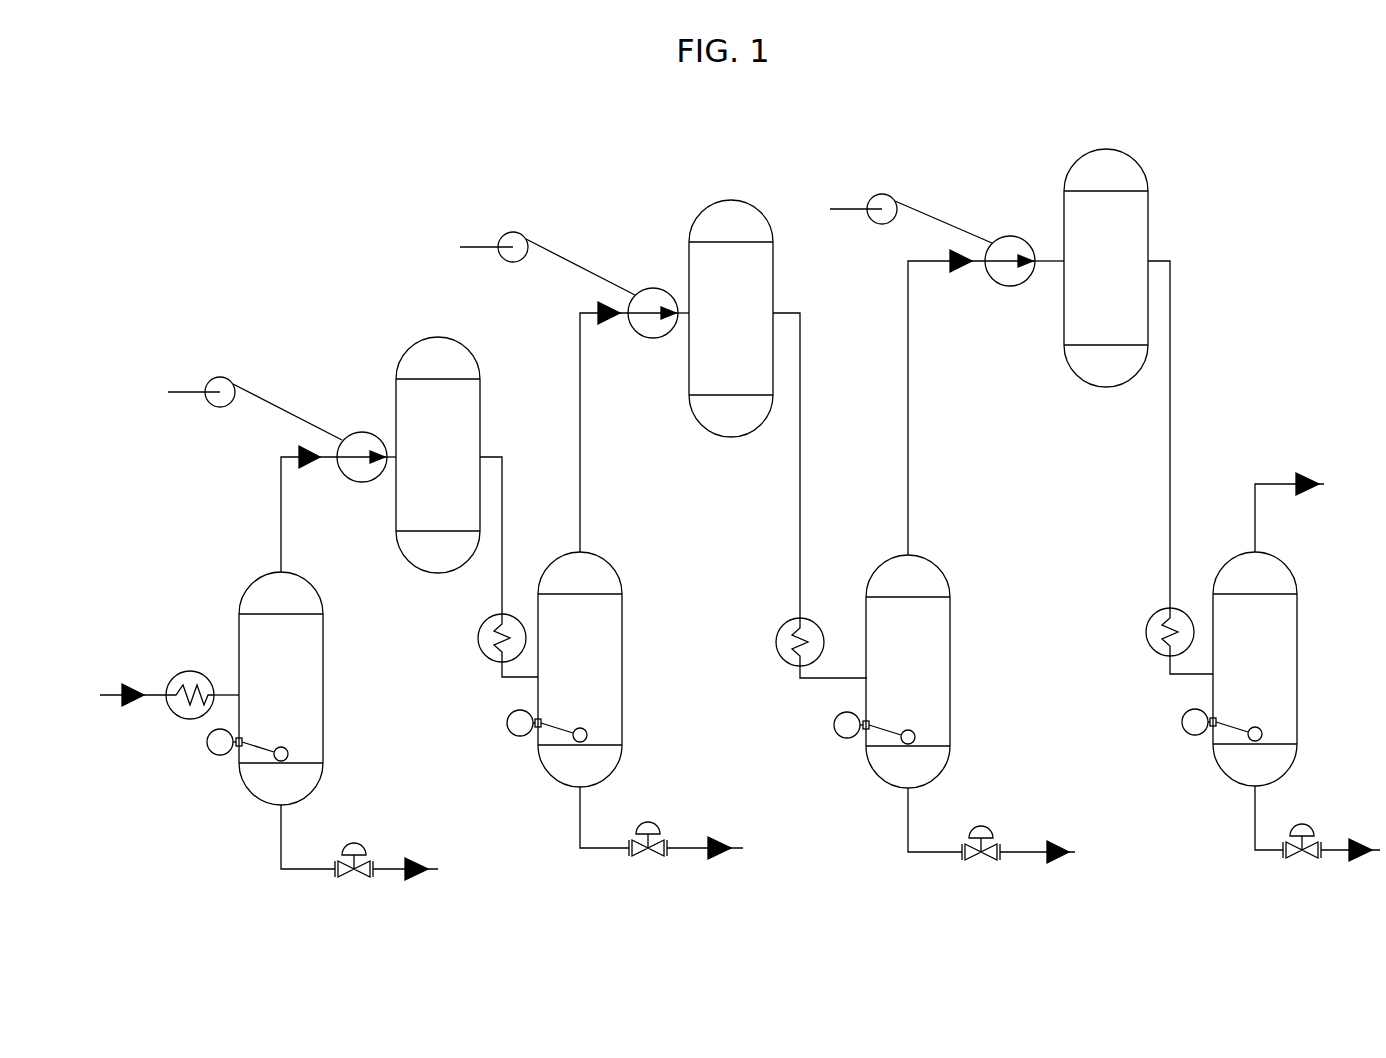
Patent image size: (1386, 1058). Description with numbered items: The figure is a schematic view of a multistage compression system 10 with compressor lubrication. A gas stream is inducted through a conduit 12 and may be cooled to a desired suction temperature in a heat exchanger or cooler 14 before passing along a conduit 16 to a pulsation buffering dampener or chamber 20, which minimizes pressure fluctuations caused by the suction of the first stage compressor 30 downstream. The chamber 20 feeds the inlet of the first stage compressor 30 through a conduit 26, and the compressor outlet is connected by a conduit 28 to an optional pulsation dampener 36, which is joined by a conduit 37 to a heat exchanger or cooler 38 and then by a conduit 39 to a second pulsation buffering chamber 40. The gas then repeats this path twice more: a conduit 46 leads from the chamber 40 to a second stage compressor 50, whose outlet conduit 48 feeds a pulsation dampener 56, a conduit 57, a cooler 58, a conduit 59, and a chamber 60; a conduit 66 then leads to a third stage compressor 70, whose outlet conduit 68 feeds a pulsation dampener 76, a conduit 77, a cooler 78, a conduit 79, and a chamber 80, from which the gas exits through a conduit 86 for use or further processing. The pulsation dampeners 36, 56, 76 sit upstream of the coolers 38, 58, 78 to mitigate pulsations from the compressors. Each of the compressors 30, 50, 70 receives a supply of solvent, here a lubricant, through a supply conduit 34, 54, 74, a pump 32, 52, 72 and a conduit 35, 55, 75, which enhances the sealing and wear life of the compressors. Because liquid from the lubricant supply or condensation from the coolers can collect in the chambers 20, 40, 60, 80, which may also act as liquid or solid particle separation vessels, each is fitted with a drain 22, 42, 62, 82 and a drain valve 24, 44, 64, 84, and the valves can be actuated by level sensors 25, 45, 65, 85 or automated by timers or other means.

The multistage compression system 10 is at (358, 134).
The conduit 12 is at (118, 688).
The heat exchanger or cooler 14 is at (188, 719).
The conduit 16 is at (228, 692).
The pulsation buffering dampener or chamber 20 is at (268, 692).
The drain 22 is at (281, 832).
The drain valve 24 is at (354, 847).
The level sensor 25 is at (208, 752).
The conduit 26 is at (278, 483).
The conduit 28 is at (393, 455).
The first stage compressor 30 is at (344, 420).
The pump 32 is at (220, 377).
The supply conduit 34 is at (188, 390).
The conduit 35 is at (237, 380).
The pulsation dampener 36 is at (425, 454).
The conduit 37 is at (503, 516).
The heat exchanger or cooler 38 is at (478, 642).
The conduit 39 is at (520, 678).
The pulsation buffering dampener or chamber 40 is at (567, 676).
The drain 42 is at (579, 825).
The drain valve 44 is at (648, 827).
The level sensor 45 is at (522, 737).
The conduit 46 is at (578, 335).
The conduit 48 is at (686, 310).
The second stage compressor 50 is at (636, 275).
The pump 52 is at (512, 232).
The supply conduit 54 is at (480, 247).
The conduit 55 is at (528, 237).
The pulsation dampener 56 is at (718, 324).
The conduit 57 is at (799, 583).
The heat exchanger or cooler 58 is at (777, 647).
The conduit 59 is at (833, 680).
The pulsation buffering dampener or chamber 60 is at (895, 676).
The drain 62 is at (907, 830).
The drain valve 64 is at (984, 831).
The level sensor 65 is at (833, 729).
The conduit 66 is at (906, 340).
The conduit 68 is at (1057, 260).
The third stage compressor 70 is at (993, 223).
The pump 72 is at (880, 194).
The supply conduit 74 is at (850, 209).
The conduit 75 is at (897, 198).
The pulsation dampener 76 is at (1093, 273).
The conduit 77 is at (1169, 550).
The heat exchanger or cooler 78 is at (1145, 634).
The conduit 79 is at (1185, 676).
The pulsation buffering dampener or chamber 80 is at (1242, 668).
The drain 82 is at (1254, 829).
The drain valve 84 is at (1303, 829).
The level sensor 85 is at (1182, 728).
The conduit 86 is at (1286, 479).